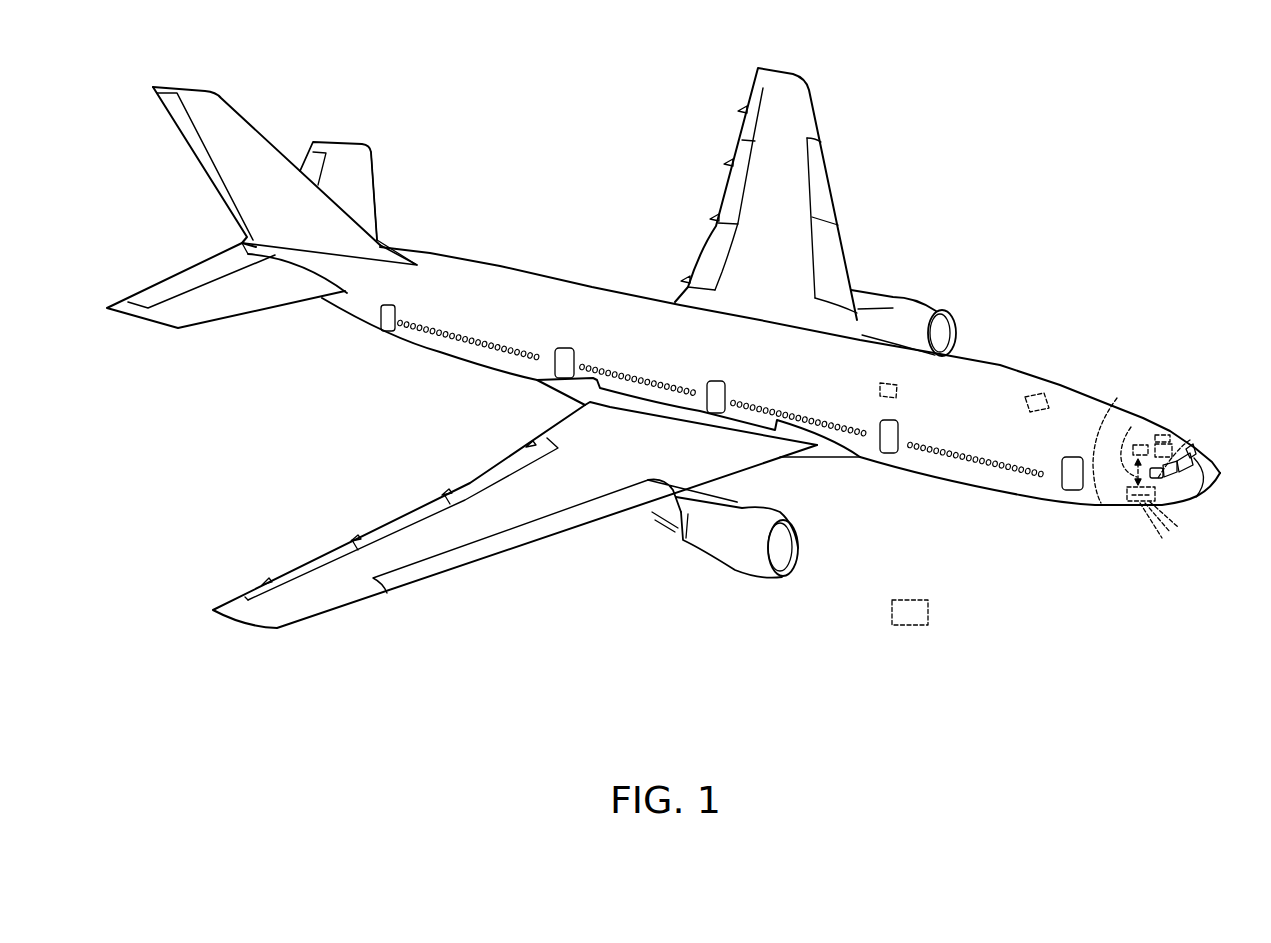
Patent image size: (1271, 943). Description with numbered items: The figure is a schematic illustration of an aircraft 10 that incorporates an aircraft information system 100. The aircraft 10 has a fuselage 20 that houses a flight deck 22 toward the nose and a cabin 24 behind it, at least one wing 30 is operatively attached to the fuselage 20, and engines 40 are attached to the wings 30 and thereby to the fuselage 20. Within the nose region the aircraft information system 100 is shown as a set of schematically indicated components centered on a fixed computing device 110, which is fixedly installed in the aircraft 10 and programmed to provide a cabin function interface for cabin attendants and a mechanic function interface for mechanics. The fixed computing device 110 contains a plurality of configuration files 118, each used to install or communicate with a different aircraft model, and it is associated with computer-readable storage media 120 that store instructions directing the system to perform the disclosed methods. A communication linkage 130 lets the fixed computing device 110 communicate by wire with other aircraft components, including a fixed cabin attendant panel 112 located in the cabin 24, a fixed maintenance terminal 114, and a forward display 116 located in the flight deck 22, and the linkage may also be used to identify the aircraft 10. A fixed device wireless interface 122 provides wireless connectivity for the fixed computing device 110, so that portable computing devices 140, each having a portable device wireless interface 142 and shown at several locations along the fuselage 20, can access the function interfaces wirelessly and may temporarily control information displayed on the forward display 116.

The aircraft 10 is at (1024, 76).
The fuselage 20 is at (516, 265).
The flight deck 22 is at (1140, 443).
The cabin 24 is at (595, 314).
The wing 30 is at (800, 117).
The engine 40 is at (927, 300).
The aircraft information system 100 is at (1088, 548).
The fixed computing device 110 is at (1133, 502).
The fixed cabin attendant panel 112 is at (1031, 394).
The fixed maintenance terminal 114 is at (1170, 445).
The forward display 116 is at (1195, 440).
The configuration files 118 is at (1172, 528).
The computer-readable storage media 120 is at (1132, 502).
The fixed device wireless interface 122 is at (1157, 488).
The communication linkage 130 is at (1118, 459).
The portable computing device 140 is at (1163, 435).
The portable device wireless interface 142 is at (1131, 427).